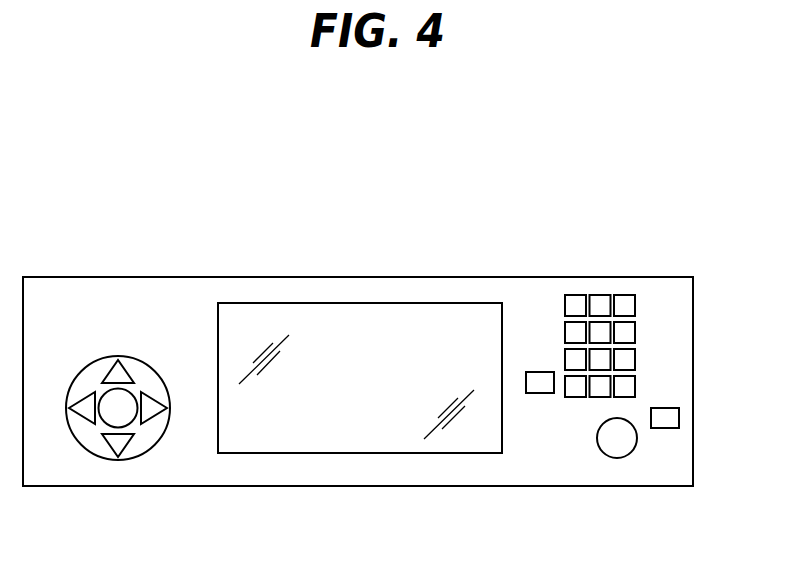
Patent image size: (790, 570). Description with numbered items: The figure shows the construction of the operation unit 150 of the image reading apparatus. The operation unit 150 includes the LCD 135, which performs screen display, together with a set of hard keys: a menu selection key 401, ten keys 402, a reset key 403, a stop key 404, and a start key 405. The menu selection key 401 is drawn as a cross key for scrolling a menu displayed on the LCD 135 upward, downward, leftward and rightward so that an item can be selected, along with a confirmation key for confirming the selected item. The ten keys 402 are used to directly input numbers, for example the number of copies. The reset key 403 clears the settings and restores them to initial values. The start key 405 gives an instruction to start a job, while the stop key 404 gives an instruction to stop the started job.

The operation unit 150 is at (257, 276).
The LCD 135 is at (368, 303).
The menu selection key 401 is at (104, 356).
The ten keys 402 is at (578, 295).
The reset key 403 is at (537, 372).
The stop key 404 is at (666, 408).
The start key 405 is at (615, 458).